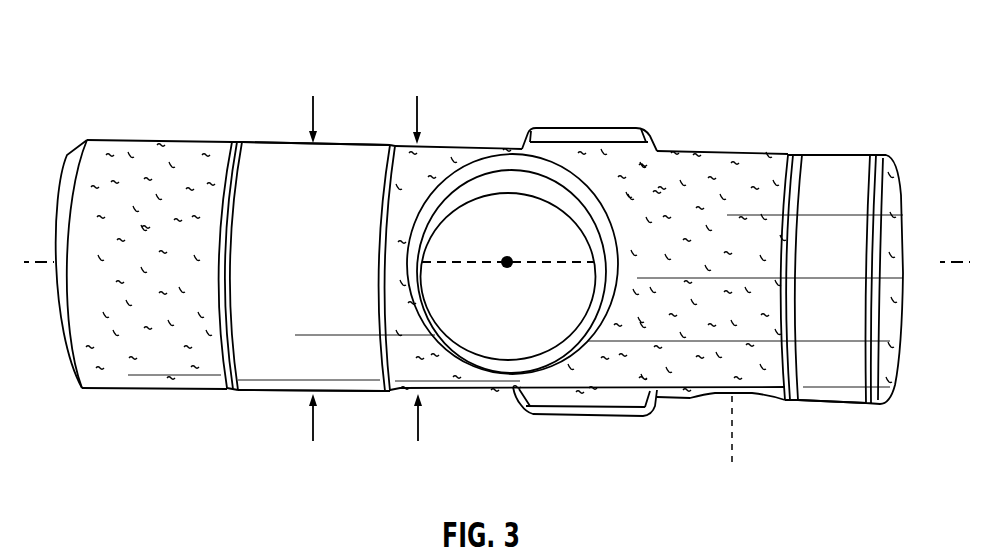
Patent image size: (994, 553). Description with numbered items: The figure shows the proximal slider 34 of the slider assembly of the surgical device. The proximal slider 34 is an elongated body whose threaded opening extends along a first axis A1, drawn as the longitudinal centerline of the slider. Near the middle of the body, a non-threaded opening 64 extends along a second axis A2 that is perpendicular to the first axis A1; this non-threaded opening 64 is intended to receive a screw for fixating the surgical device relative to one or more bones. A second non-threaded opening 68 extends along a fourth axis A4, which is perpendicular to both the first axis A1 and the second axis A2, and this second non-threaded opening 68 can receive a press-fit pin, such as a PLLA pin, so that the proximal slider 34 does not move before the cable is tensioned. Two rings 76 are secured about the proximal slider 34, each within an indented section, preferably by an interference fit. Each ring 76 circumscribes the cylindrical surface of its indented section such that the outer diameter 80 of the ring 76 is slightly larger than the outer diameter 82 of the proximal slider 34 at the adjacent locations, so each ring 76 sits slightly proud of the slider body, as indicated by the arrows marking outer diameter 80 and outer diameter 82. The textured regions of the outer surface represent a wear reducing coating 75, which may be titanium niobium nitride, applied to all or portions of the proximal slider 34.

The proximal slider 34 is at (127, 35).
The non-threaded opening 64 is at (505, 208).
The second non-threaded opening 68 is at (702, 400).
The wear reducing coating 75 is at (153, 345).
The ring 76 is at (287, 153).
The outer diameter of the ring 80 is at (313, 422).
The outer diameter of the proximal slider 82 is at (418, 422).
The first axis A1 is at (53, 263).
The second axis A2 is at (507, 269).
The fourth axis A4 is at (733, 412).